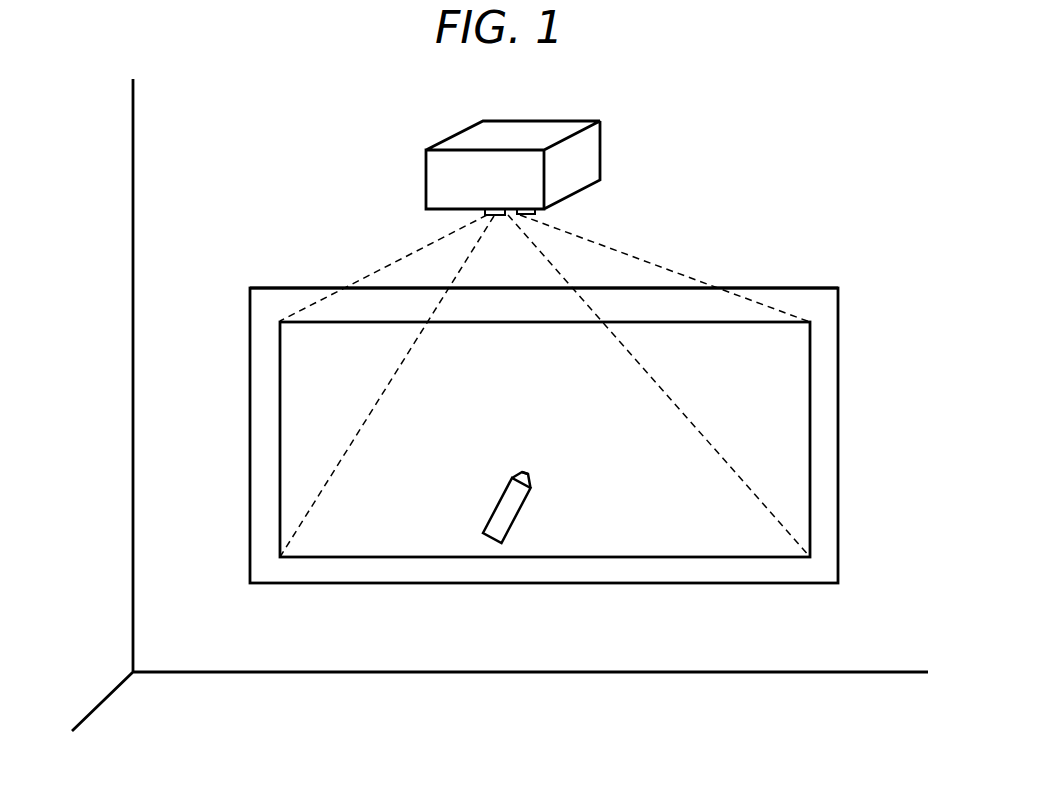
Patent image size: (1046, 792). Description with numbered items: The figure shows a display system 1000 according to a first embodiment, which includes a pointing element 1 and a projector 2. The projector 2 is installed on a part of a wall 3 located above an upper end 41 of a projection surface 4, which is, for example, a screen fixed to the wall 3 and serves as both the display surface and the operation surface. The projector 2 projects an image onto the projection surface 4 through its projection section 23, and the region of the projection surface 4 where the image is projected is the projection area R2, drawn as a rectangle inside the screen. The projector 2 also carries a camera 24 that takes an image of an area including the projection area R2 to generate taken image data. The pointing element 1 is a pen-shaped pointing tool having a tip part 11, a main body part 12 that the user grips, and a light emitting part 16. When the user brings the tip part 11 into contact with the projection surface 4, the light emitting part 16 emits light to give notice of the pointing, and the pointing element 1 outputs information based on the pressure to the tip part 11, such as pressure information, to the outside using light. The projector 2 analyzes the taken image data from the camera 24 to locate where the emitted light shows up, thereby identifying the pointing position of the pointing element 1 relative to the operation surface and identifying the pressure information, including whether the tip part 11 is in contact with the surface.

The display system 1000 is at (796, 105).
The pointing element 1 is at (501, 513).
The projector 2 is at (544, 122).
The wall 3 is at (258, 158).
The projection surface 4 is at (838, 415).
The upper end 41 is at (342, 289).
The projection section 23 is at (489, 216).
The camera 24 is at (536, 213).
The projection area R2 is at (810, 482).
The tip part 11 is at (532, 478).
The main body part 12 is at (515, 519).
The light emitting part 16 is at (528, 474).